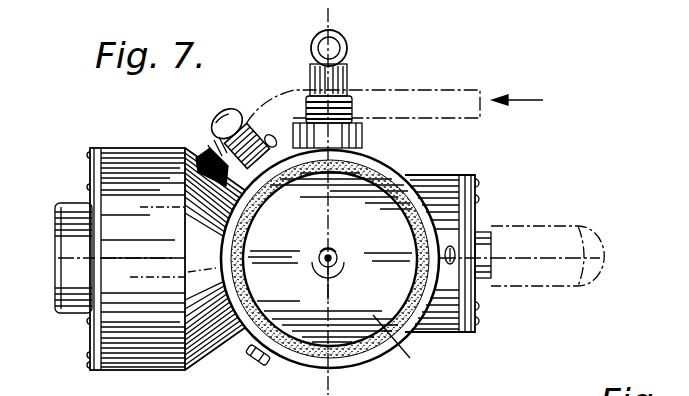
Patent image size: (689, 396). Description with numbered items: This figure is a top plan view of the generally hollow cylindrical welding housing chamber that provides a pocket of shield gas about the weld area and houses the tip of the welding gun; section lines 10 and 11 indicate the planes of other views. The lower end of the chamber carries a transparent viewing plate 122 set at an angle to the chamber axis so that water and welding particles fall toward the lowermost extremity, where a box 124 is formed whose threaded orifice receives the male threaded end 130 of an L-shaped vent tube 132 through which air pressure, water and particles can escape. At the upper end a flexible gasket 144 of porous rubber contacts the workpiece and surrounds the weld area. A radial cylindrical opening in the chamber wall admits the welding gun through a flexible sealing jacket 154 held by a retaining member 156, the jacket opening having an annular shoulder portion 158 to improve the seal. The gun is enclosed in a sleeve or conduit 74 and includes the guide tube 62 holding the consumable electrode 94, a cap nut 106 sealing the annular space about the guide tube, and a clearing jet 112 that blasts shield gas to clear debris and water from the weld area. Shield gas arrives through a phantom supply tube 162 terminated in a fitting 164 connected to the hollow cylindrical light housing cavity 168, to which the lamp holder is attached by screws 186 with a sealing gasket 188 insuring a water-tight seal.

The control valve assembly 10 is at (63, 395).
The section line 11 is at (232, 14).
The guide tube 62 is at (343, 250).
The sleeve or conduit 74 is at (556, 232).
The consumable electrode 94 is at (331, 246).
The cap nut 106 is at (334, 274).
The clearing jet 112 is at (314, 248).
The transparent viewing plate 122 is at (410, 358).
The box 124 is at (362, 134).
The male threaded end 130 is at (352, 104).
The vent tube 132 is at (348, 42).
The flexible gasket 144 is at (412, 169).
The flexible sealing jacket 154 is at (462, 332).
The retaining member 156 is at (480, 189).
The annular shoulder portion 158 is at (487, 280).
The shield gas supply tube 162 is at (454, 96).
The fitting 164 is at (228, 128).
The light housing cavity 168 is at (186, 366).
The screws 186 is at (88, 186).
The sealing gasket 188 is at (100, 372).